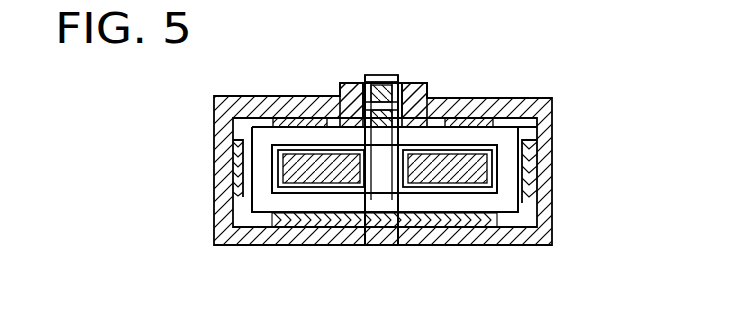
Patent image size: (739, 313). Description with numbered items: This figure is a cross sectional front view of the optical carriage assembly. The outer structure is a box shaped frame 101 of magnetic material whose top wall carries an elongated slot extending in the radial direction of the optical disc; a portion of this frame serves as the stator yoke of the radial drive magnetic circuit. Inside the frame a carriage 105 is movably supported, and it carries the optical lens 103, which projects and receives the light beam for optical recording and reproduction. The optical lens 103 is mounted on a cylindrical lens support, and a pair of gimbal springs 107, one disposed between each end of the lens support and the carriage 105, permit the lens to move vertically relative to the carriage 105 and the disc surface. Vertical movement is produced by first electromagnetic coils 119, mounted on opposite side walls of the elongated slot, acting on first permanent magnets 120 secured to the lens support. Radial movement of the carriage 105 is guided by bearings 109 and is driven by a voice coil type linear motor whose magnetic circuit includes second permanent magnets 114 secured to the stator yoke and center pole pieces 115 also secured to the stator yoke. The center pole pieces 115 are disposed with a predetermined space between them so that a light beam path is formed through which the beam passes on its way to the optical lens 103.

The box shaped frame 101 is at (553, 103).
The optical lens 103 is at (408, 78).
The carriage 105 is at (400, 216).
The gimbal springs 107 is at (345, 127).
The bearings 109 is at (298, 120).
The second permanent magnets 114 is at (530, 128).
The center pole pieces 115 is at (350, 188).
The first electromagnetic coils 119 is at (368, 77).
The first permanent magnets 120 is at (383, 78).